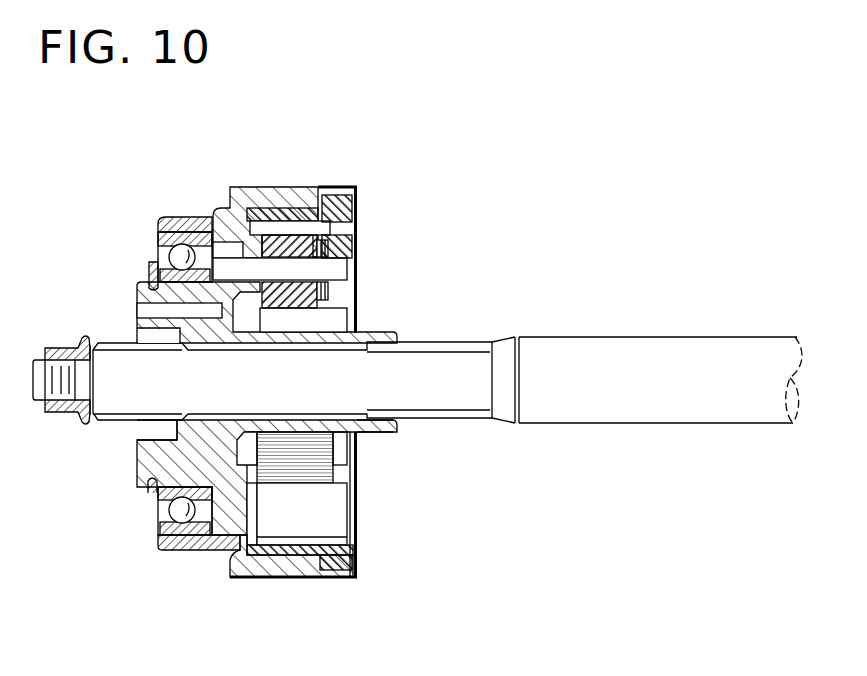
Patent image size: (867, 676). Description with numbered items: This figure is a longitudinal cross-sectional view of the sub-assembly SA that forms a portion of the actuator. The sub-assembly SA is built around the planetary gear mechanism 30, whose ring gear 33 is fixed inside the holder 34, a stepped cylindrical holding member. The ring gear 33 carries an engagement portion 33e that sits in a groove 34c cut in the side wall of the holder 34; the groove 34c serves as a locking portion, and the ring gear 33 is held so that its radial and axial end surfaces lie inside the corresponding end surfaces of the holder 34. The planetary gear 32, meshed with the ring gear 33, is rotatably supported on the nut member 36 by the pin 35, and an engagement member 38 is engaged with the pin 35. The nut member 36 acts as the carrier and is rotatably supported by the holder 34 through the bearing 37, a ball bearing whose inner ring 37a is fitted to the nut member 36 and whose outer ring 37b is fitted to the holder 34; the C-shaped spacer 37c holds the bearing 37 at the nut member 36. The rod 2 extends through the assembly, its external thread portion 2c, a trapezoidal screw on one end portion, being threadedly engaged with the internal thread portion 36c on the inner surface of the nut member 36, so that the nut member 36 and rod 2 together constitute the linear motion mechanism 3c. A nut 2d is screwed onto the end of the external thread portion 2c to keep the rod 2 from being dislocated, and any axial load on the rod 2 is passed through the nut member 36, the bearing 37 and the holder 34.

The rod 2 is at (678, 360).
The external thread portion 2c is at (102, 422).
The nut 2d is at (62, 421).
The linear motion mechanism 3c is at (375, 462).
The planetary gear mechanism 30 is at (289, 583).
The planetary gear 32 is at (300, 236).
The ring gear 33 is at (278, 216).
The engagement portion 33e is at (355, 194).
The holder 34 is at (243, 197).
The groove 34c is at (337, 192).
The pin 35 is at (220, 268).
The nut member 36 is at (135, 290).
The internal thread portion 36c is at (173, 343).
The bearing 37 is at (153, 232).
The inner ring 37a is at (158, 497).
The outer ring 37b is at (185, 540).
The spacer 37c is at (152, 285).
The engagement member 38 is at (354, 242).
The sub-assembly SA is at (465, 315).